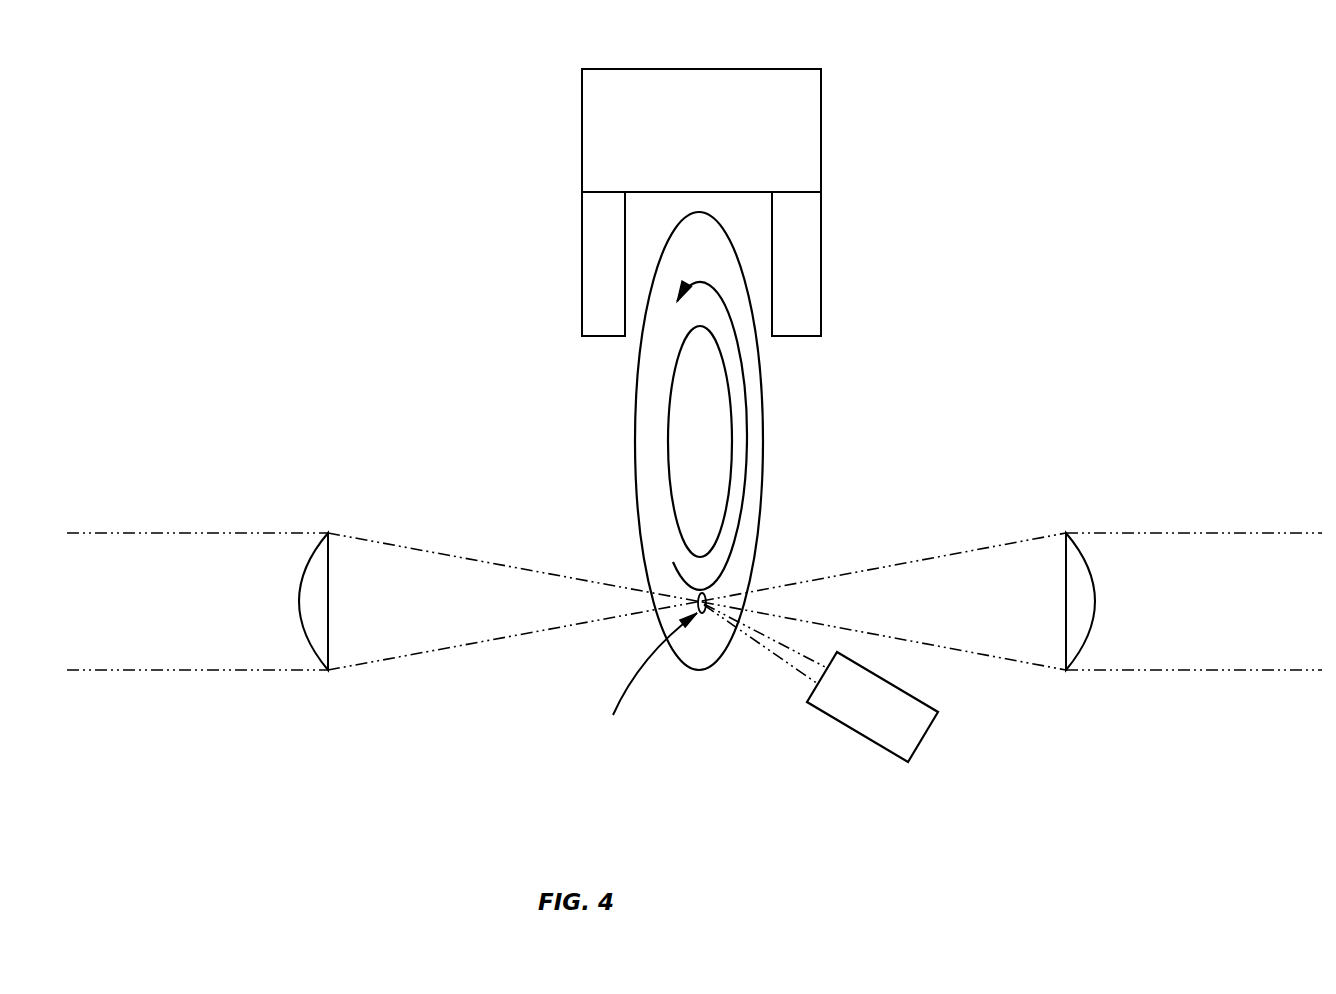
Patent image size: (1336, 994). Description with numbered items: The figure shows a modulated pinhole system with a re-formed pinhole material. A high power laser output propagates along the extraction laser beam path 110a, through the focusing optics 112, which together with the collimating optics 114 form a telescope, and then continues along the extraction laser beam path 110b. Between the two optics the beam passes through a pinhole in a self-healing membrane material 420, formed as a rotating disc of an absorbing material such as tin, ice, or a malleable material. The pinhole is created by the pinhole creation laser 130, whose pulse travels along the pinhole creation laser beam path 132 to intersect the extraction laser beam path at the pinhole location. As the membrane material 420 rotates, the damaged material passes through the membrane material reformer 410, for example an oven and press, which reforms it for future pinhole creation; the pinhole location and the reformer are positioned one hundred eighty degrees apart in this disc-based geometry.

The membrane material reformer 410 is at (701, 202).
The membrane material 420 is at (757, 477).
The extraction laser beam path 110a is at (212, 578).
The extraction laser beam path 110b is at (1218, 582).
The focusing optics 112 is at (318, 670).
The collimating optics 114 is at (1073, 533).
The pinhole creation laser 130 is at (927, 733).
The pinhole creation laser beam path 132 is at (760, 647).